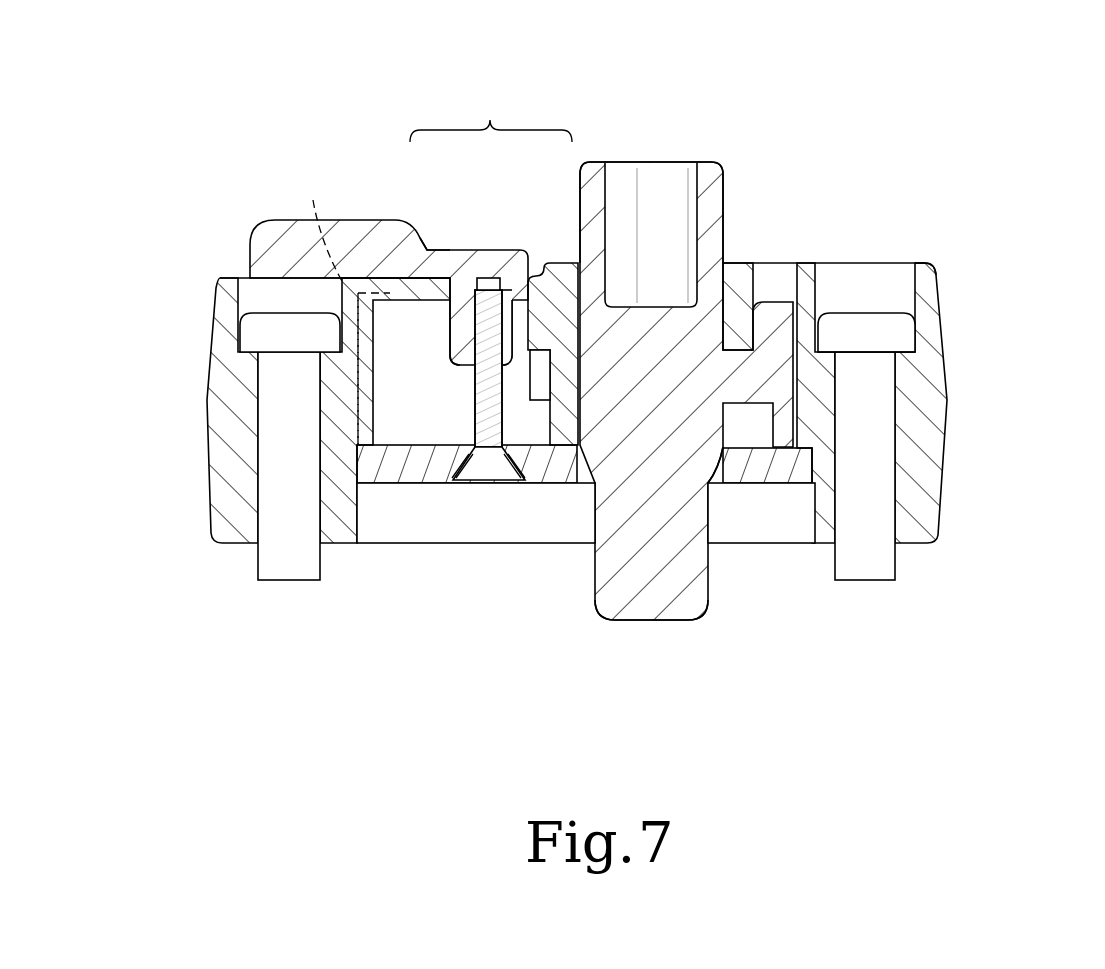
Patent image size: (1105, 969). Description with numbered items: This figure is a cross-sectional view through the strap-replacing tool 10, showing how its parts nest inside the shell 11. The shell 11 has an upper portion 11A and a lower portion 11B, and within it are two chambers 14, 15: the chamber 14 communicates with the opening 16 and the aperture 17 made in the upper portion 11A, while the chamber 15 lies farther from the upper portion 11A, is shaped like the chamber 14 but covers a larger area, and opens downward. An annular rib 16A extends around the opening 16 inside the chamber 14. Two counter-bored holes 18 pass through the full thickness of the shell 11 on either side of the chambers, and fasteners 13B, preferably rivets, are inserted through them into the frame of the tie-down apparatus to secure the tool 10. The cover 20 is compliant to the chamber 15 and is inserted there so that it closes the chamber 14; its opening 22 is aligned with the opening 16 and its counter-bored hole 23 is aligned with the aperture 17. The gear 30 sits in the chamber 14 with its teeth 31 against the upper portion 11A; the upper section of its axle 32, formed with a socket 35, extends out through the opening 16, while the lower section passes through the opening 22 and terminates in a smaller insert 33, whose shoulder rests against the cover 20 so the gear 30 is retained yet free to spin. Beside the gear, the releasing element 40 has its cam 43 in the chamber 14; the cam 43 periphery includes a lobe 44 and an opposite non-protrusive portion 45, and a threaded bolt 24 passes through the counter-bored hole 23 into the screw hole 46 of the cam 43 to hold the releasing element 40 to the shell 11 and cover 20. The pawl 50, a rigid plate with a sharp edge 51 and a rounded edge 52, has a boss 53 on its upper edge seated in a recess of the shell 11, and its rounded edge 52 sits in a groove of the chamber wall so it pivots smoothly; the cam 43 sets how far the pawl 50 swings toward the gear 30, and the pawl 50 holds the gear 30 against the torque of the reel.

The strap-replacing tool 10 is at (240, 178).
The shell 11 is at (935, 410).
The upper portion 11A is at (228, 278).
The lower portion 11B is at (907, 543).
The fasteners 13B is at (278, 563).
The chamber 14 is at (790, 413).
The chamber 15 is at (360, 513).
The opening 16 is at (717, 273).
The annular rib 16A is at (748, 323).
The aperture 17 is at (450, 277).
The counter-bored holes 18 is at (898, 282).
The cover 20 is at (803, 460).
The opening 22 is at (702, 505).
The counter-bored hole 23 is at (477, 460).
The threaded bolt 24 is at (495, 470).
The gear 30 is at (755, 373).
The teeth 31 is at (543, 387).
The axle 32 is at (713, 420).
The insert 33 is at (648, 603).
The socket 35 is at (661, 172).
The releasing element 40 is at (345, 220).
The cam 43 is at (491, 108).
The lobe 44 is at (467, 287).
The non-protrusive portion 45 is at (508, 320).
The screw hole 46 is at (490, 283).
The pawl 50 is at (413, 423).
The sharp edge 51 is at (552, 430).
The rounded edge 52 is at (357, 410).
The boss 53 is at (313, 200).